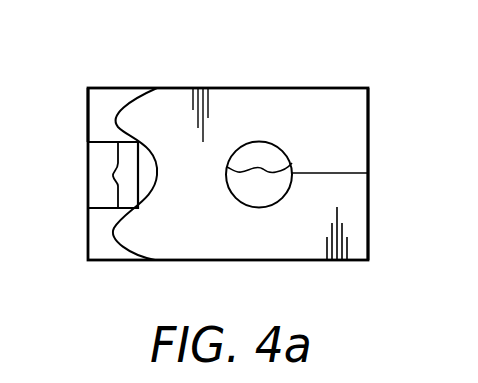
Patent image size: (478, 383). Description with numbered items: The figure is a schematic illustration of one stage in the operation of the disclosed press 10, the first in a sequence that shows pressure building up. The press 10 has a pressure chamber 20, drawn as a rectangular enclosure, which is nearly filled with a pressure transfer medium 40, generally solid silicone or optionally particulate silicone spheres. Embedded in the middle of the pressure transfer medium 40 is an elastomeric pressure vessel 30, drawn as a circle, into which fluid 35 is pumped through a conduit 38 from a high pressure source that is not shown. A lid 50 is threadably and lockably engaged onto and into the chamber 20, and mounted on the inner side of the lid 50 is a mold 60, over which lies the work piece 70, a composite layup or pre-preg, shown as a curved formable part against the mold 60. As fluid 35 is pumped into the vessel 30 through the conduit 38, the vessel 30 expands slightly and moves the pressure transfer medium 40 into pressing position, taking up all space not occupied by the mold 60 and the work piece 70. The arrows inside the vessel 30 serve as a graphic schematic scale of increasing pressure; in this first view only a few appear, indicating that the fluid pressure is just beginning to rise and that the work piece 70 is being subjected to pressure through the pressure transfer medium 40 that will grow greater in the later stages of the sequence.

The press 10 is at (257, 71).
The pressure chamber 20 is at (368, 105).
The elastomeric pressure vessel 30 is at (270, 207).
The fluid 35 is at (244, 200).
The conduit 38 is at (345, 172).
The pressure transfer medium 40 is at (189, 227).
The lid 50 is at (88, 125).
The mold 60 is at (96, 207).
The work piece 70 is at (118, 208).